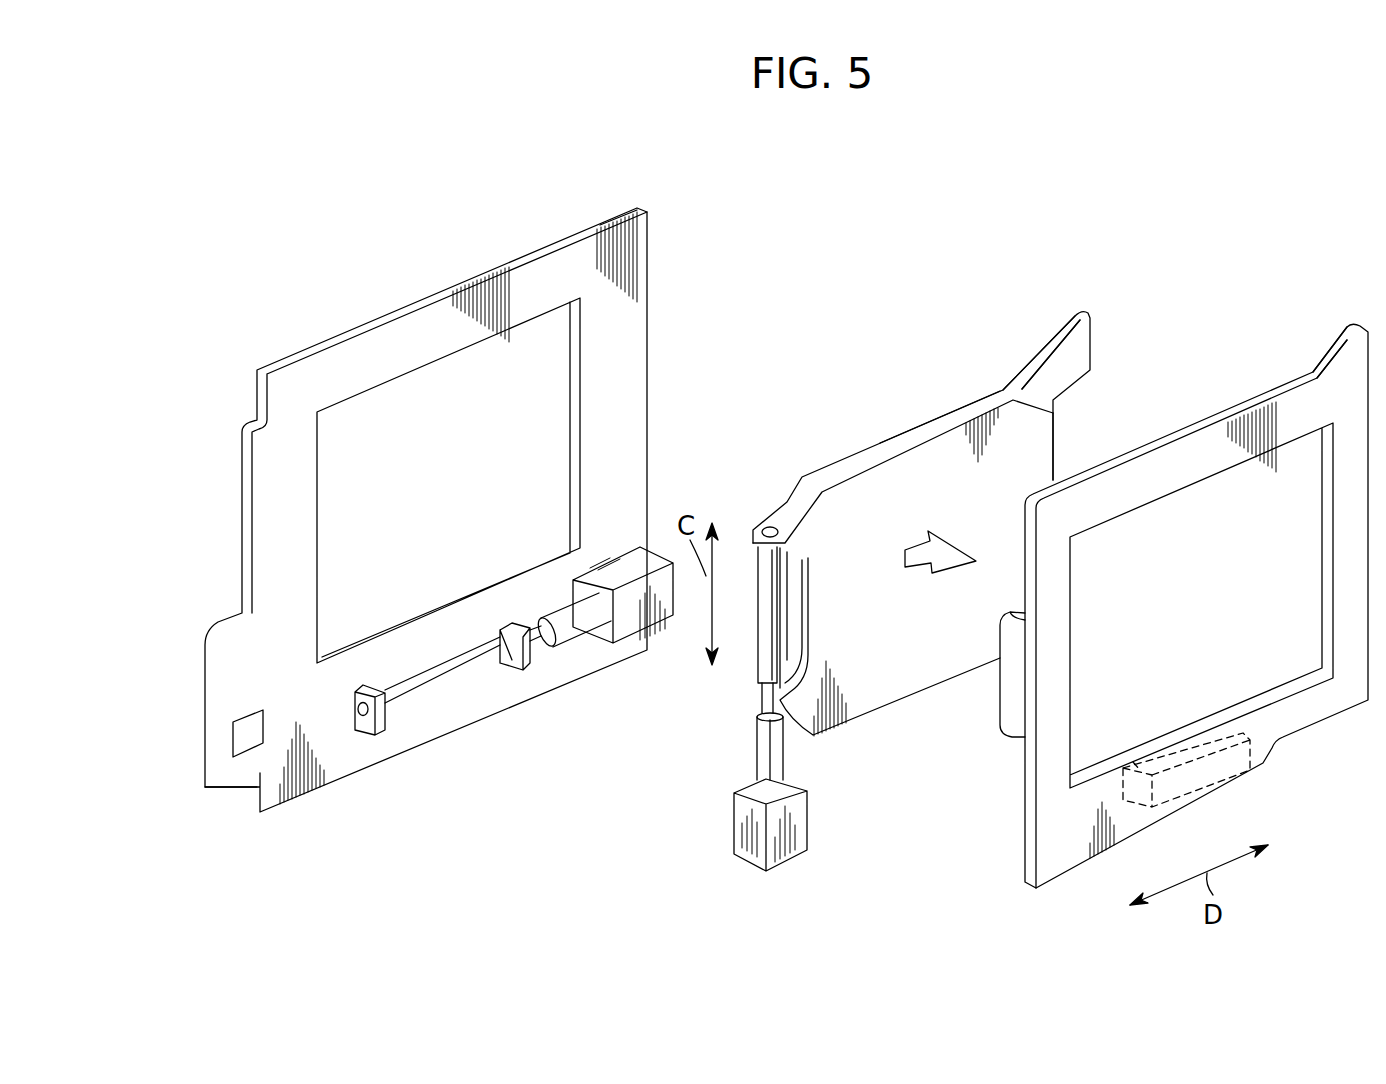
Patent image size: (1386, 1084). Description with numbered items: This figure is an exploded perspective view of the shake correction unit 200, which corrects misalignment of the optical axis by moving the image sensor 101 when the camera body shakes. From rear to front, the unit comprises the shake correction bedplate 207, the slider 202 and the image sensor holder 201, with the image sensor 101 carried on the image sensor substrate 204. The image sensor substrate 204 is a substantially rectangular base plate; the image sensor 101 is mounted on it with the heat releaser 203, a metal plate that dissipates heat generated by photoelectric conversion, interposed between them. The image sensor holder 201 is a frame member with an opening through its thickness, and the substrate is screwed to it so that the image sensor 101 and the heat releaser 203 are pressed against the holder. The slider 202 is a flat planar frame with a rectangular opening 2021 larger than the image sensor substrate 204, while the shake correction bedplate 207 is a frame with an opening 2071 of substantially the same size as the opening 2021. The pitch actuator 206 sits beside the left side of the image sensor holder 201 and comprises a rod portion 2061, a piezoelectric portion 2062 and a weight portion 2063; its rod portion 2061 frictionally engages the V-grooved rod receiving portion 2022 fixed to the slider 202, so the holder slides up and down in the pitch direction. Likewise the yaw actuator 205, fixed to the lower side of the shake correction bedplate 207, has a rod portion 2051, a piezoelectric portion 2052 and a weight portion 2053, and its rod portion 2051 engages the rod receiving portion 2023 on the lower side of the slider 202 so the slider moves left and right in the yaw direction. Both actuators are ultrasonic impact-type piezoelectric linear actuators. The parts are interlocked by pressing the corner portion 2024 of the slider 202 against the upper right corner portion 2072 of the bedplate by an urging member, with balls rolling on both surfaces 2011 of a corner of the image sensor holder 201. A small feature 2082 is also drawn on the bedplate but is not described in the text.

The image sensor 101 is at (998, 468).
The shake correction unit 200 is at (937, 275).
The image sensor holder 201 is at (845, 457).
The surfaces of corner portion of image sensor holder 2011 is at (1042, 330).
The slider 202 is at (1080, 817).
The opening 2021 is at (1222, 473).
The rod receiving portion 2022 is at (1012, 715).
The rod receiving portion 2023 is at (1197, 777).
The corner portion of slider 2024 is at (1322, 343).
The heat releaser 203 is at (915, 434).
The image sensor substrate 204 is at (857, 641).
The yaw actuator 205 is at (518, 674).
The rod portion 2051 is at (420, 692).
The piezoelectric portion 2052 is at (573, 632).
The weight portion 2053 is at (652, 632).
The pitch actuator 206 is at (730, 680).
The rod portion 2061 is at (764, 597).
The piezoelectric portion 2062 is at (766, 772).
The weight portion 2063 is at (786, 870).
The shake correction bedplate 207 is at (270, 555).
The opening 2071 is at (440, 368).
The upper right corner portion of bedplate 2072 is at (613, 240).
The hole 2082 is at (243, 740).